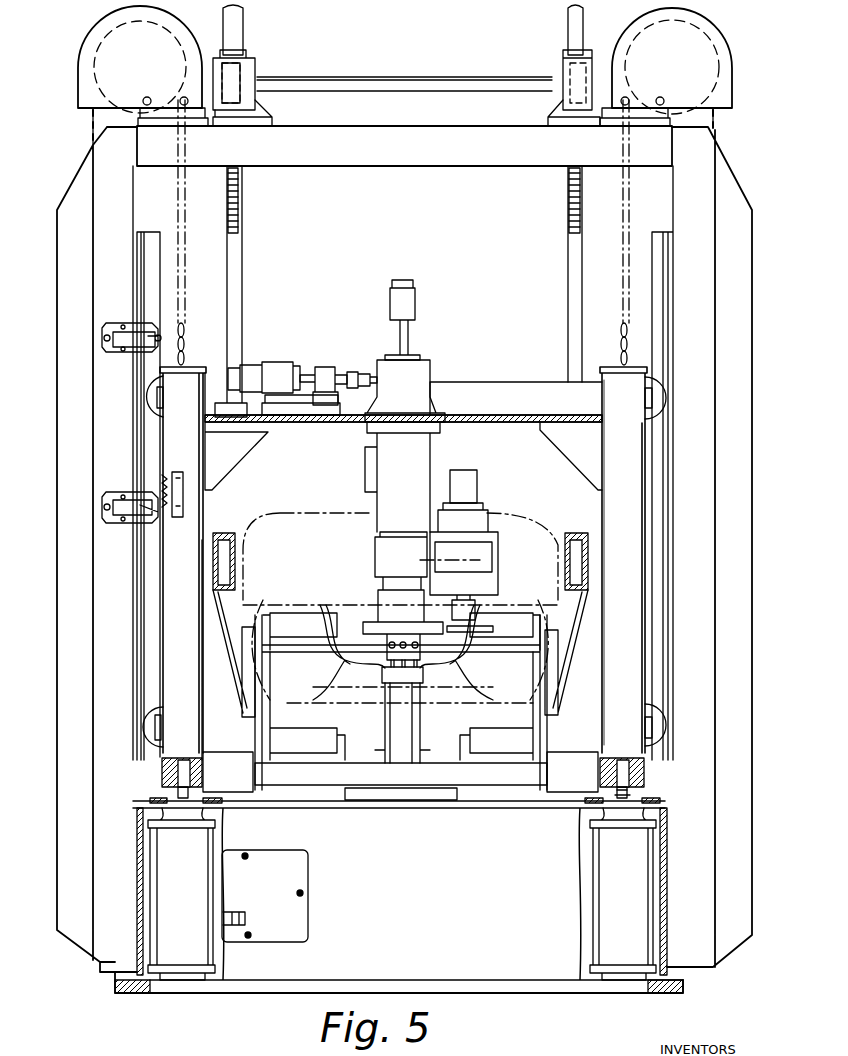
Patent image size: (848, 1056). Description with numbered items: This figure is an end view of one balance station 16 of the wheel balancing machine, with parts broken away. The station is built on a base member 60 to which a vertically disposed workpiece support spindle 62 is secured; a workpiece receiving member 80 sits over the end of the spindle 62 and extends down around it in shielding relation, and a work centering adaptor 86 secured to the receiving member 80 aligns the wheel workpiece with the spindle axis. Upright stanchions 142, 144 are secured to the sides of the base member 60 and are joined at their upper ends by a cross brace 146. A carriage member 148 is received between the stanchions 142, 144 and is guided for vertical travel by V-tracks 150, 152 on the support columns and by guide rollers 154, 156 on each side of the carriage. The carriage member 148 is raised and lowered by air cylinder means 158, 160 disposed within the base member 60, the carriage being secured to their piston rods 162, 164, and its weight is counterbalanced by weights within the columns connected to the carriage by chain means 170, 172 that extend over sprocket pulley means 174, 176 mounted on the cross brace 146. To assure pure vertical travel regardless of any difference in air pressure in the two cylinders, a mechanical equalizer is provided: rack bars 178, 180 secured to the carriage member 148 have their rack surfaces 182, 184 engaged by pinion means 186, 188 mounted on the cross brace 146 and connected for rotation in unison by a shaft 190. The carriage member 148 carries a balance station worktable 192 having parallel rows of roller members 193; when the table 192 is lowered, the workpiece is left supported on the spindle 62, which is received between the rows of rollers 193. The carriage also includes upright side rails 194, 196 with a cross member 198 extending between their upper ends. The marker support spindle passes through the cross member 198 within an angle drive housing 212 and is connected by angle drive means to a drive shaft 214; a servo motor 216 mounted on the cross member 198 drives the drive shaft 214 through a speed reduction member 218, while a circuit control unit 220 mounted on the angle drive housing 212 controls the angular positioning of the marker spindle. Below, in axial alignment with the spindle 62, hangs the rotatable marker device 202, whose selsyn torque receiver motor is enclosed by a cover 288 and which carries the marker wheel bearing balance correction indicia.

The balance station 16 is at (264, 1002).
The base member 60 is at (470, 975).
The workpiece support spindle 62 is at (420, 747).
The workpiece receiving member 80 is at (402, 676).
The work centering adaptor 86 is at (403, 635).
The stanchion 142 is at (70, 618).
The stanchion 144 is at (740, 612).
The cross brace 146 is at (352, 157).
The carriage member 148 is at (647, 459).
The V-track 150 is at (148, 245).
The V-track 152 is at (658, 254).
The guide roller 154 is at (152, 403).
The guide roller 156 is at (652, 397).
The air cylinder means 158 is at (200, 908).
The air cylinder means 160 is at (600, 890).
The piston rod 162 is at (186, 805).
The piston rod 164 is at (630, 796).
The chain means 170 is at (182, 322).
The chain means 172 is at (623, 325).
The sprocket pulley means 174 is at (98, 52).
The sprocket pulley means 176 is at (710, 75).
The rack bar 178 is at (232, 328).
The rack bar 180 is at (570, 325).
The rack surface 182 is at (240, 220).
The rack surface 184 is at (570, 228).
The pinion means 186 is at (245, 90).
The pinion means 188 is at (570, 78).
The shaft 190 is at (470, 80).
The worktable 192 is at (385, 786).
The roller members 193 is at (282, 742).
The side rail 194 is at (170, 645).
The side rail 196 is at (640, 607).
The cross member 198 is at (565, 400).
The marker device 202 is at (508, 515).
The angle drive housing 212 is at (435, 385).
The drive shaft 214 is at (356, 375).
The servo motor 216 is at (268, 376).
The speed reduction member 218 is at (323, 367).
The circuit control unit 220 is at (410, 312).
The cover 288 is at (470, 495).